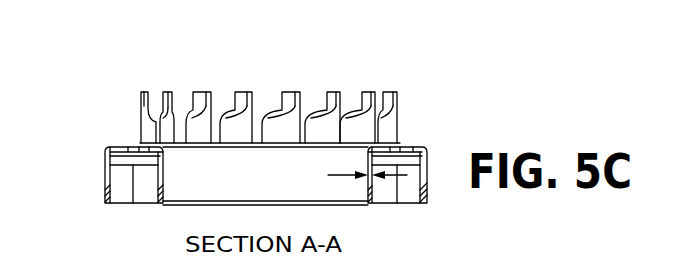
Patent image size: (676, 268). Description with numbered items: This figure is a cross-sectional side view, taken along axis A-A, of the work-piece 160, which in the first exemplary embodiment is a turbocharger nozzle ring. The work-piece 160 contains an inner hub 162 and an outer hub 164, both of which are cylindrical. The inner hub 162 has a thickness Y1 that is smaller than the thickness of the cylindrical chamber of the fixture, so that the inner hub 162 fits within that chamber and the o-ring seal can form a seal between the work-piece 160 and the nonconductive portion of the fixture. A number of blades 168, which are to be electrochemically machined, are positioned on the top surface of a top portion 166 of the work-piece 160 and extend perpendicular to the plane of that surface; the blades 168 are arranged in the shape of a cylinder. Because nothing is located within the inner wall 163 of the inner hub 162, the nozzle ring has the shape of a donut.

The work-piece 160 is at (486, 55).
The inner hub 162 is at (156, 212).
The inner wall 163 is at (172, 170).
The outer hub 164 is at (92, 210).
The top portion 166 is at (130, 131).
The blades 168 is at (298, 82).